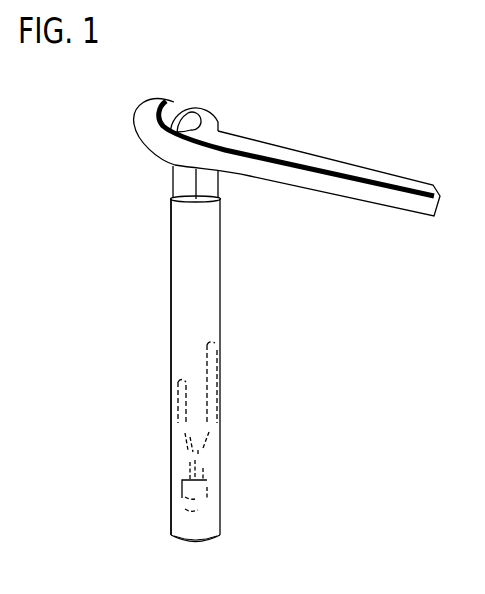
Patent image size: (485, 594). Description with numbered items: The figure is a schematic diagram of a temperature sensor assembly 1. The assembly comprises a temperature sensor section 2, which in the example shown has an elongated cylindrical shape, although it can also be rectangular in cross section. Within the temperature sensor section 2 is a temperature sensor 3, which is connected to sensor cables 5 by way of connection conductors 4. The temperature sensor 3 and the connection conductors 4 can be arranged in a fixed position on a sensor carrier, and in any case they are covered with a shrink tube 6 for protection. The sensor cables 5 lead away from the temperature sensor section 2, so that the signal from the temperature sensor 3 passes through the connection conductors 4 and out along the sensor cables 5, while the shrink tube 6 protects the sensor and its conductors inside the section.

The temperature sensor assembly 1 is at (108, 185).
The temperature sensor section 2 is at (143, 386).
The temperature sensor 3 is at (183, 492).
The connection conductors 4 is at (185, 418).
The sensor cables 5 is at (295, 178).
The shrink tube 6 is at (200, 535).